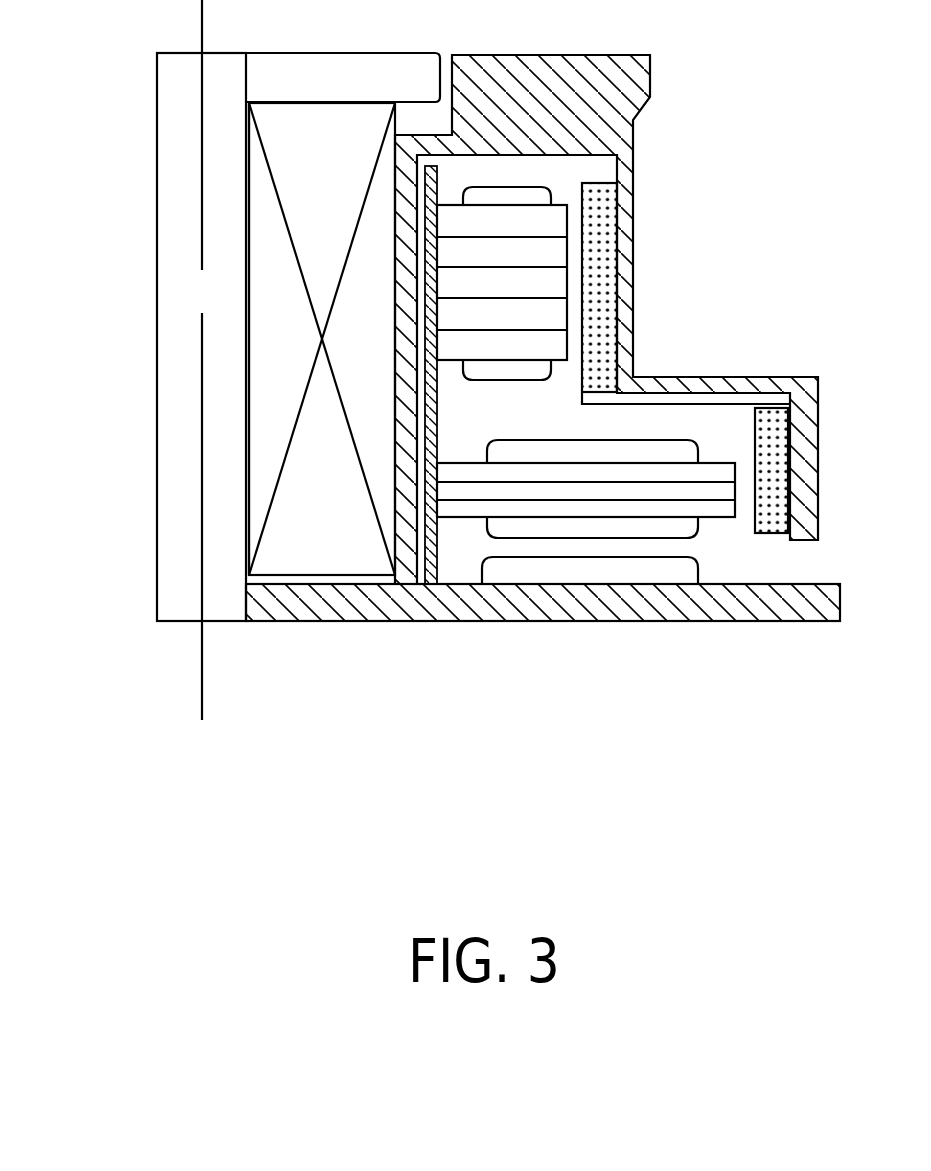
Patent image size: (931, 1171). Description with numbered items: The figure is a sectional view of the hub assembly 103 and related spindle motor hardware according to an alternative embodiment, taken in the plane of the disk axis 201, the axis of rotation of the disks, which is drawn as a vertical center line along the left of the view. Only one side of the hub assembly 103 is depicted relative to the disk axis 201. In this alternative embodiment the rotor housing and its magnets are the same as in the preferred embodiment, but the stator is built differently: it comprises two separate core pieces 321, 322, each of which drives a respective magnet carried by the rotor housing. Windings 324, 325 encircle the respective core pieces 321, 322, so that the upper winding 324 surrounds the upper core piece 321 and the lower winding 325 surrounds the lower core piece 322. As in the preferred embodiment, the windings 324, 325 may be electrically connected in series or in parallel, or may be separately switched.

The hub assembly 103 is at (703, 296).
The disk axis 201 is at (202, 683).
The core piece 321 is at (458, 234).
The core piece 322 is at (511, 513).
The winding 324 is at (525, 367).
The winding 325 is at (667, 457).